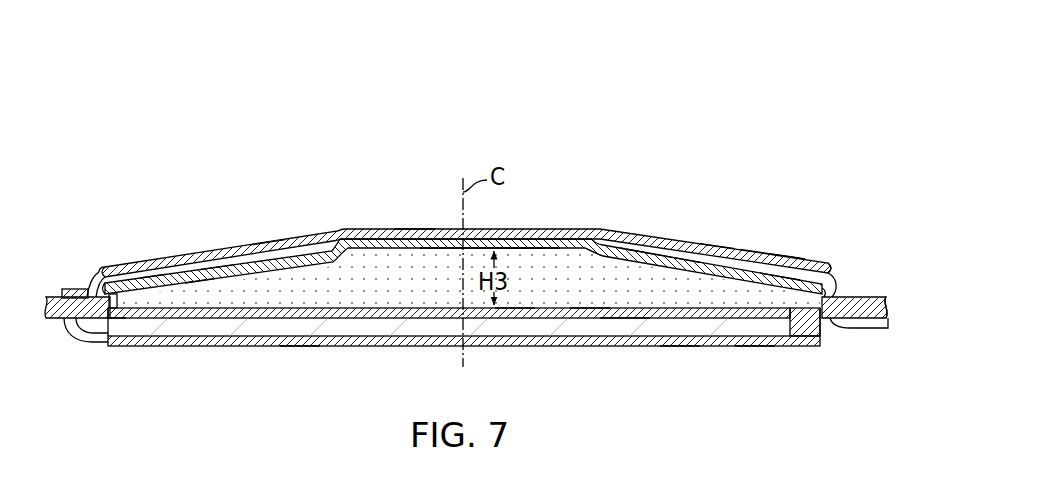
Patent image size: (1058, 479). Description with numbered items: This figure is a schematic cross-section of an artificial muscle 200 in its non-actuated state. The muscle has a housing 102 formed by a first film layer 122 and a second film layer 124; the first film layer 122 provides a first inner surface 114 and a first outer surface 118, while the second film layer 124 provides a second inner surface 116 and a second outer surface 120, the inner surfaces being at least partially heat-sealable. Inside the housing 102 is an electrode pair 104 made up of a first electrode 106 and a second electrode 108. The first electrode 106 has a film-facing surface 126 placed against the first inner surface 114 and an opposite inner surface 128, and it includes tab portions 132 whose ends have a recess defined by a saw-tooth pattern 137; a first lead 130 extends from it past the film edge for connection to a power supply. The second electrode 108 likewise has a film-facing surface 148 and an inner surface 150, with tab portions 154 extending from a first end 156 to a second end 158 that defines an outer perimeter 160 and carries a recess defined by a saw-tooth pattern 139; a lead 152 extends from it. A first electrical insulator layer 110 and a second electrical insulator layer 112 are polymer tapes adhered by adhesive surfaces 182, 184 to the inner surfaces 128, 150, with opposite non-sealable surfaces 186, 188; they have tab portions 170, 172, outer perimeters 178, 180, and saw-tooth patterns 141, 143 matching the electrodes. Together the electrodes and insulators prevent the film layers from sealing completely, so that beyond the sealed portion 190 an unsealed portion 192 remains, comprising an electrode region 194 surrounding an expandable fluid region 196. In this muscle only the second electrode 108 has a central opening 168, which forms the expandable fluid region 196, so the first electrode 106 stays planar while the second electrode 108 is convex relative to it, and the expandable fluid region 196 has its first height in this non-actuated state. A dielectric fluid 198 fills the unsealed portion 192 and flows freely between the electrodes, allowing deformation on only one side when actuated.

The artificial muscle 200 is at (475, 241).
The housing 102 is at (448, 211).
The electrode pair 104 is at (481, 378).
The first electrode 106 is at (695, 396).
The second electrode 108 is at (777, 190).
The first electrical insulator layer 110 is at (439, 301).
The second electrical insulator layer 112 is at (449, 256).
The first inner surface 114 is at (110, 320).
The second inner surface 116 is at (72, 248).
The first outer surface 118 is at (82, 343).
The second outer surface 120 is at (60, 297).
The first film layer 122 is at (464, 378).
The second film layer 124 is at (469, 199).
The film-facing surface 126 is at (262, 320).
The inner surface 128 is at (205, 340).
The first lead 130 is at (66, 345).
The tab portions 132 is at (298, 397).
The saw-tooth pattern 137 is at (818, 346).
The saw-tooth pattern 139 is at (152, 278).
The saw-tooth pattern 141 is at (777, 279).
The saw-tooth pattern 143 is at (140, 320).
The film-facing surface 148 is at (203, 276).
The inner surface 150 is at (217, 268).
The lead 152 is at (876, 334).
The tab portions 154 is at (262, 191).
The first end 156 is at (461, 241).
The second end 158 is at (120, 283).
The outer perimeter 160 is at (90, 272).
The central opening 168 is at (410, 185).
The tab portions 170 is at (767, 380).
The tab portions 172 is at (846, 255).
The outer perimeter 178 is at (813, 336).
The outer perimeter 180 is at (811, 301).
The adhesive surface 182 is at (616, 316).
The adhesive surface 184 is at (648, 270).
The non-sealable surface 186 is at (588, 322).
The non-sealable surface 188 is at (583, 257).
The sealed portion 190 is at (893, 306).
The unsealed portion 192 is at (803, 209).
The electrode region 194 is at (732, 198).
The expandable fluid region 196 is at (531, 211).
The dielectric fluid 198 is at (514, 322).